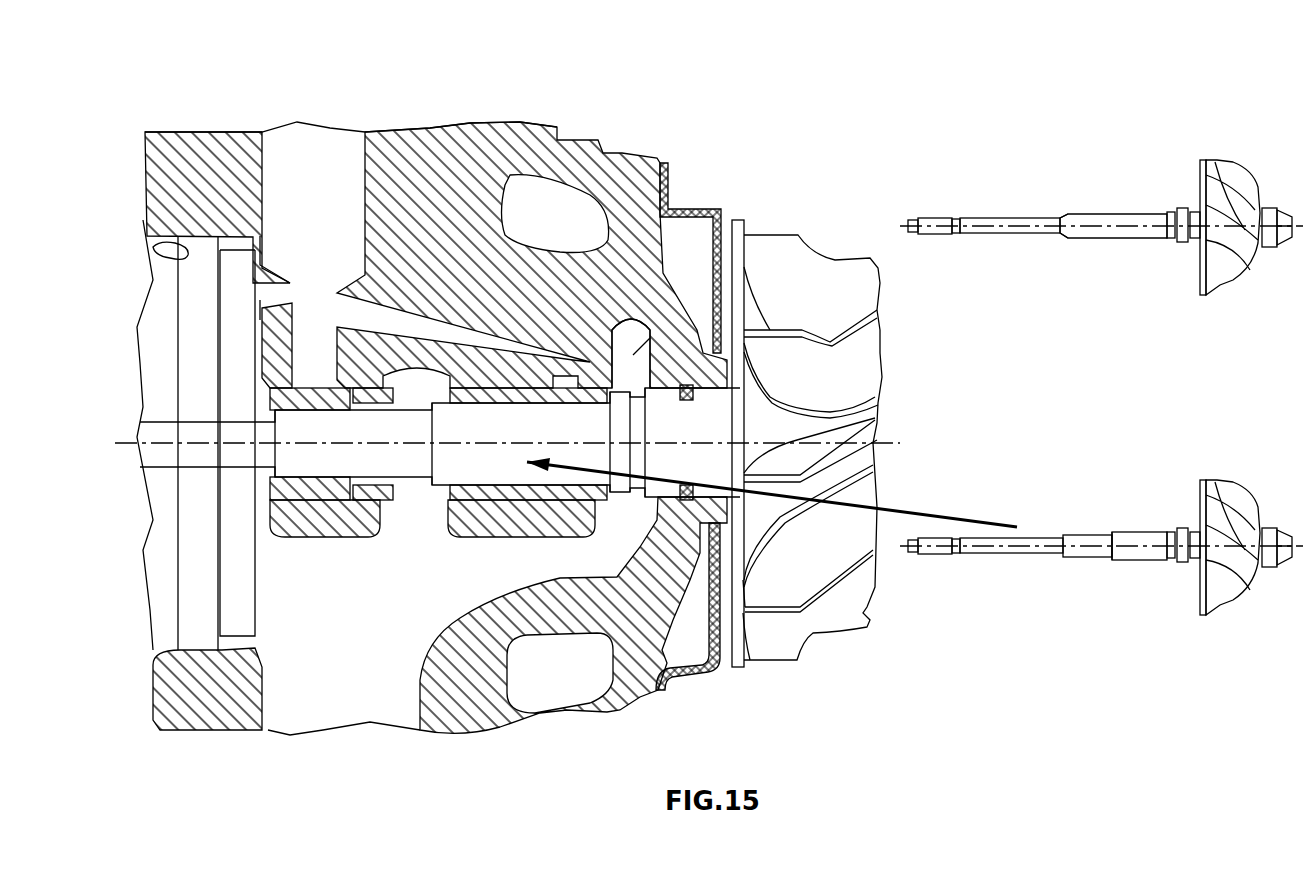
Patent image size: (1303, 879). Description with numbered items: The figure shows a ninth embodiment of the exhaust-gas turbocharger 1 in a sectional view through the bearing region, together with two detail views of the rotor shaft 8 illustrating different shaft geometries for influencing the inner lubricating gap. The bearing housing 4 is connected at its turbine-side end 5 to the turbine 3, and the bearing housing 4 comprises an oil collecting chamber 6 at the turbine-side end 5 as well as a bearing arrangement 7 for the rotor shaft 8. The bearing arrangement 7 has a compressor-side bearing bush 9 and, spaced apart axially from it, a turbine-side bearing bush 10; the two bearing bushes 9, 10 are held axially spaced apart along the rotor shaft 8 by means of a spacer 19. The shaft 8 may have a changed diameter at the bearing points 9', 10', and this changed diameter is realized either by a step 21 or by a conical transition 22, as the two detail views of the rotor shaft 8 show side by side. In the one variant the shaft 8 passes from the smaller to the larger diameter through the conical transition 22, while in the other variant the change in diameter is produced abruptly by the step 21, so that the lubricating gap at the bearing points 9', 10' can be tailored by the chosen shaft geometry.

The exhaust-gas turbocharger 1 is at (483, 115).
The turbine 3 is at (820, 232).
The bearing housing 4 is at (660, 157).
The turbine-side end 5 is at (735, 214).
The oil collecting chamber 6 is at (632, 356).
The bearing arrangement 7 is at (543, 504).
The rotor shaft 8 is at (285, 452).
The compressor-side bearing bush 9 is at (212, 490).
The bearing point 9' is at (217, 220).
The turbine-side bearing bush 10 is at (497, 629).
The bearing point 10' is at (624, 239).
The spacer 19 is at (374, 372).
The step 21 is at (1113, 534).
The conical transition 22 is at (1062, 216).